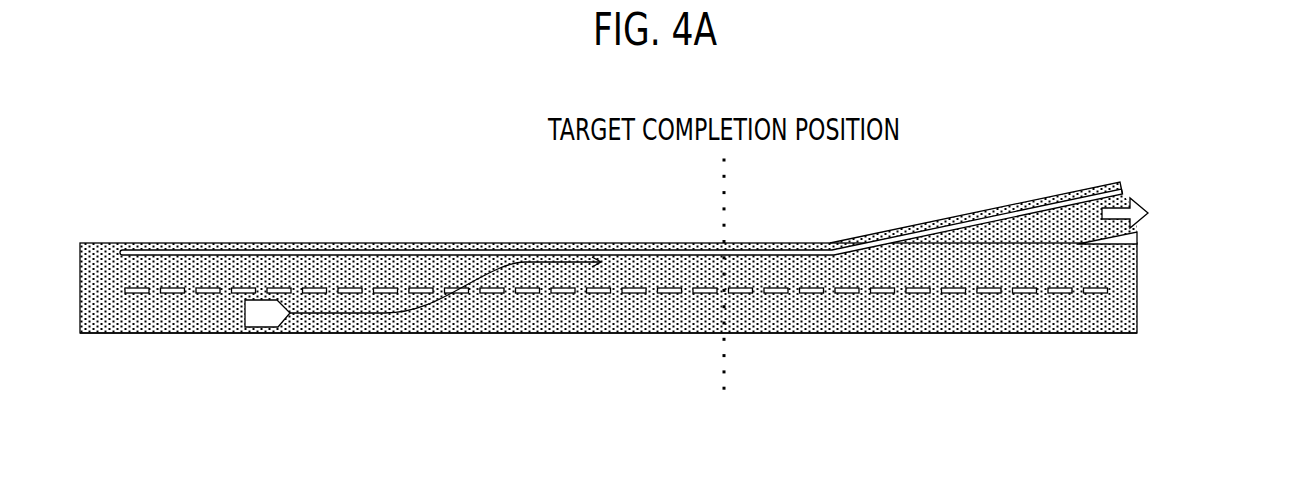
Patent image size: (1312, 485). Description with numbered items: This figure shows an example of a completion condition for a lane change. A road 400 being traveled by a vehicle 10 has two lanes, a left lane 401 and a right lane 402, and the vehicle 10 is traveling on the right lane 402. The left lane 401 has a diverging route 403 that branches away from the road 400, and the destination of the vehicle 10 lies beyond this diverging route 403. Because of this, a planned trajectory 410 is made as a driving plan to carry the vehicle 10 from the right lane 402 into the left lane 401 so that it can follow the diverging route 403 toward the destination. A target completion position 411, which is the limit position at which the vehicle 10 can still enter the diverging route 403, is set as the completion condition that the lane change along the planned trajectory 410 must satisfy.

The vehicle 10 is at (262, 318).
The road 400 is at (1147, 243).
The left lane 401 is at (750, 265).
The right lane 402 is at (818, 332).
The diverging route 403 is at (1016, 228).
The planned trajectory 410 is at (417, 305).
The target completion position 411 is at (718, 356).